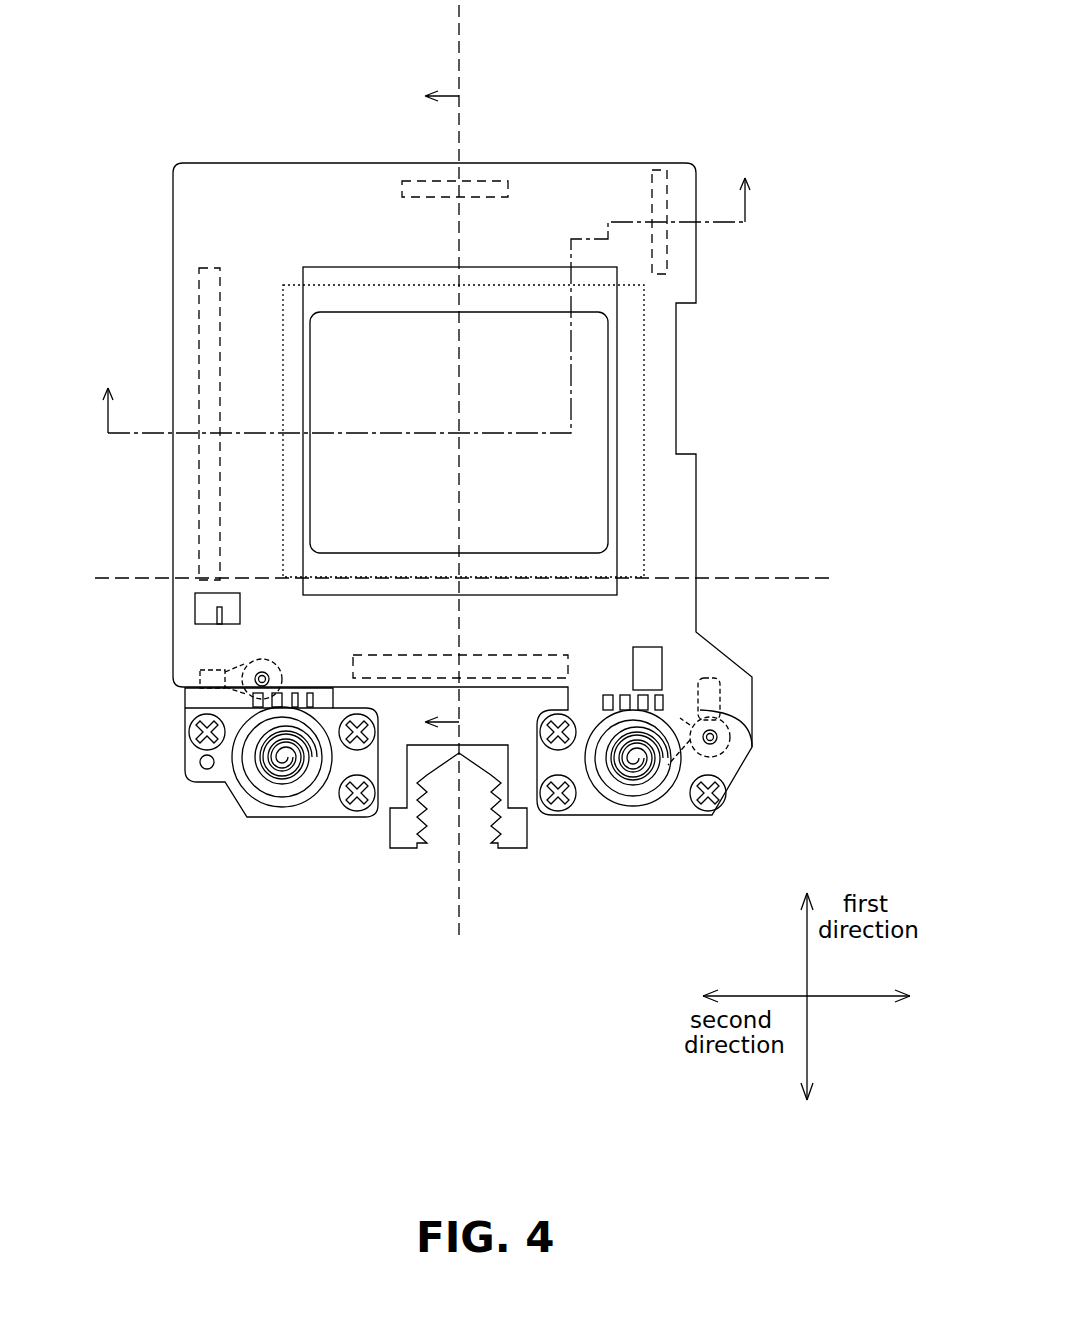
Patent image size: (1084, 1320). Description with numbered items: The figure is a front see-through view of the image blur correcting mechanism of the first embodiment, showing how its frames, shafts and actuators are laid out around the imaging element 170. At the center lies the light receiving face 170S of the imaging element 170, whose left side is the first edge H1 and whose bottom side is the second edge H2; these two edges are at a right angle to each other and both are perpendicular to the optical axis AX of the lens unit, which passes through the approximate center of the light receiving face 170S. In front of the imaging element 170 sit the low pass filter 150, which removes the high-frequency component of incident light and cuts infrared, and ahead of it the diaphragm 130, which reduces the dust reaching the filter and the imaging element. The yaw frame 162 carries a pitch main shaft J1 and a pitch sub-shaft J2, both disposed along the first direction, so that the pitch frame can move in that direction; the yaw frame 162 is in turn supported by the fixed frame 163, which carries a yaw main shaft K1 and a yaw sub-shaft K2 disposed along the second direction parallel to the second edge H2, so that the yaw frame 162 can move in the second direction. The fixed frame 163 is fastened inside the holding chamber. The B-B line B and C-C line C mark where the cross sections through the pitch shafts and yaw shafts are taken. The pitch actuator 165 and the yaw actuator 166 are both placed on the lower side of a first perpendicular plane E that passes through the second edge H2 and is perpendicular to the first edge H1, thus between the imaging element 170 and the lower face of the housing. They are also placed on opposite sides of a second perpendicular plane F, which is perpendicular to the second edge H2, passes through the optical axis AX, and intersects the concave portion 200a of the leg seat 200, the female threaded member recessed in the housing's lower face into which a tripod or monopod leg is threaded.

The diaphragm 130 is at (617, 316).
The low pass filter 150 is at (608, 360).
The imaging element 170 is at (644, 402).
The light receiving face 170S is at (630, 478).
The first edge H1 is at (645, 440).
The second edge H2 is at (590, 578).
The optical axis AX is at (459, 433).
The pitch main shaft J1 is at (199, 288).
The pitch sub-shaft J2 is at (660, 170).
The yaw main shaft K1 is at (514, 678).
The yaw sub-shaft K2 is at (493, 180).
The yaw frame 162 is at (176, 712).
The fixed frame 163 is at (173, 657).
The pitch actuator 165 is at (296, 818).
The yaw actuator 166 is at (613, 818).
The leg seat 200 is at (393, 850).
The concave portion 200a is at (443, 842).
The B-B line B is at (425, 288).
The C-C line C is at (429, 410).
The first perpendicular plane E is at (812, 576).
The second perpendicular plane F is at (530, 916).